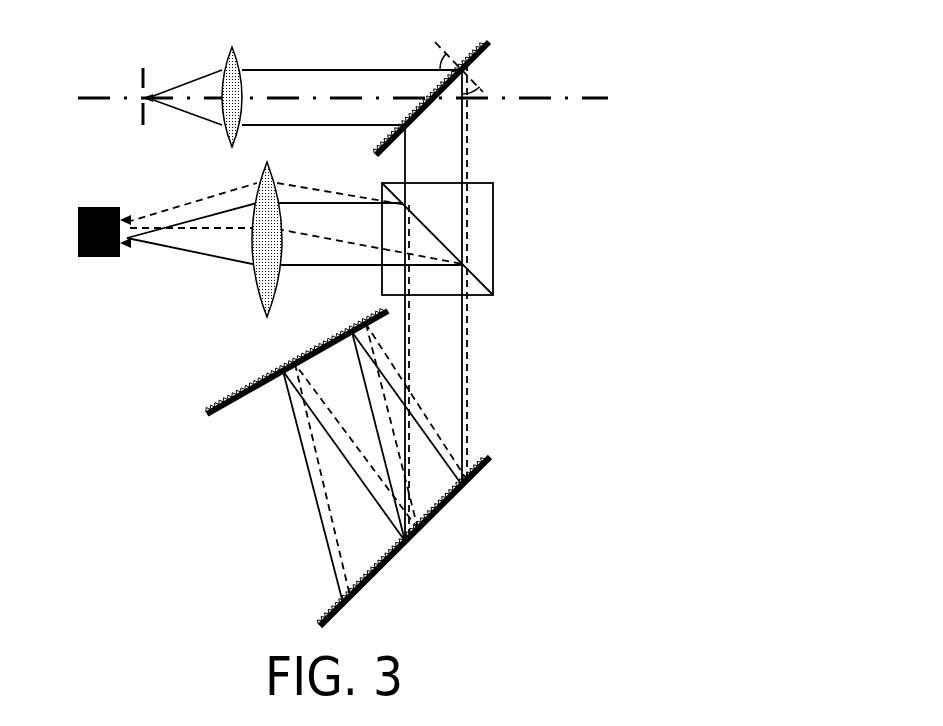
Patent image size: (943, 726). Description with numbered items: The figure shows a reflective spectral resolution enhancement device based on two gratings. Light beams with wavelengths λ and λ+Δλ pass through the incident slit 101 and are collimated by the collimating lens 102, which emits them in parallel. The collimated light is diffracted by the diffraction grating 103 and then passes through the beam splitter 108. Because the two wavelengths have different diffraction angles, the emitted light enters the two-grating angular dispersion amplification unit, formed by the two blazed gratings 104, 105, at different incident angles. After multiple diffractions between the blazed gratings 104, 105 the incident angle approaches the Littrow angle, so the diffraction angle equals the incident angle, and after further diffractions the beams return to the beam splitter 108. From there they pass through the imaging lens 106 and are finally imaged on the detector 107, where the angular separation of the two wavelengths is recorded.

The incident slit 101 is at (152, 111).
The collimating lens 102 is at (233, 81).
The diffraction grating 103 is at (451, 96).
The blazed grating 104 is at (281, 361).
The blazed grating 105 is at (404, 541).
The imaging lens 106 is at (268, 254).
The detector 107 is at (117, 235).
The beam splitter 108 is at (462, 239).